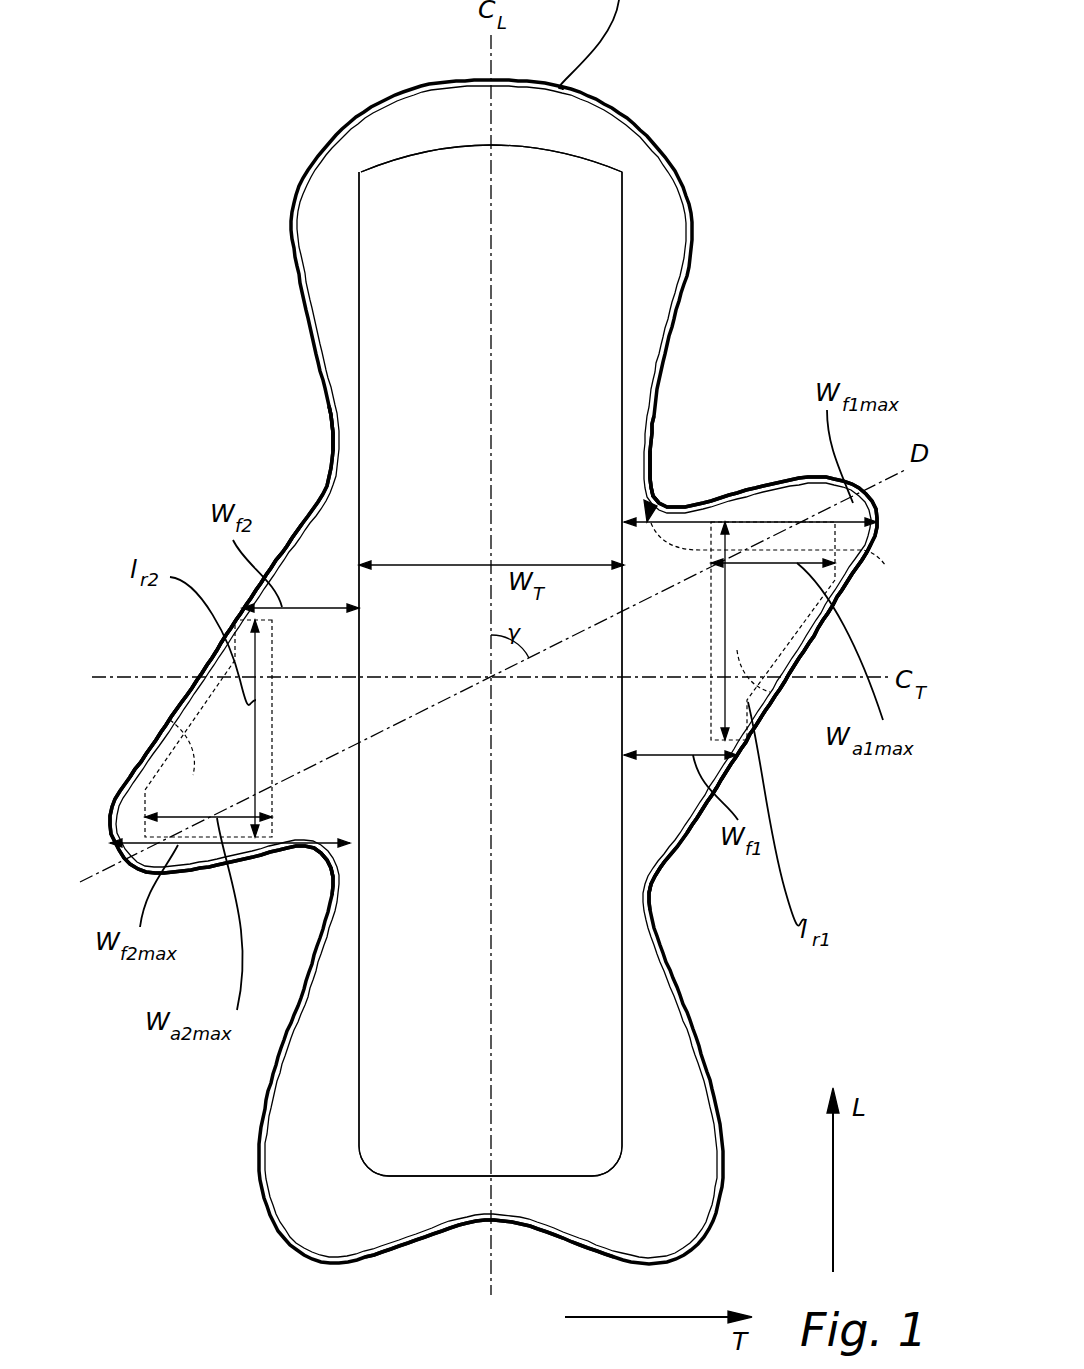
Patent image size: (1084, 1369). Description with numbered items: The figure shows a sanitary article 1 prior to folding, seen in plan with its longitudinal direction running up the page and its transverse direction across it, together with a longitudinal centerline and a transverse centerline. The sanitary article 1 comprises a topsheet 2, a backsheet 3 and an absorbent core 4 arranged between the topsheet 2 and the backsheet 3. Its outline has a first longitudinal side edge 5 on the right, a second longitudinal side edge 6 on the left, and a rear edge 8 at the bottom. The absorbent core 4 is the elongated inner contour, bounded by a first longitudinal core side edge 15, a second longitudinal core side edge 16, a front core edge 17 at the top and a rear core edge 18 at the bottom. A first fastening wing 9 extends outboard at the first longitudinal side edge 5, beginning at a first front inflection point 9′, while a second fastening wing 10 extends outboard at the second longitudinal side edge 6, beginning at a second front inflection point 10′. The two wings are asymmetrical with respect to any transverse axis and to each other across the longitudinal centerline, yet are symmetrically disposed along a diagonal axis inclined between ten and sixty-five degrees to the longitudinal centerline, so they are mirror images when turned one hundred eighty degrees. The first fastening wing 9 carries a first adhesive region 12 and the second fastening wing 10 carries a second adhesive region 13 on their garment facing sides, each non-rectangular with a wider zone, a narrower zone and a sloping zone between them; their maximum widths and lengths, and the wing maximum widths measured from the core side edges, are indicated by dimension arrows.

The sanitary article 1 is at (728, 289).
The topsheet 2 is at (660, 497).
The backsheet 3 is at (776, 560).
The absorbent core 4 is at (580, 178).
The first longitudinal side edge 5 is at (655, 457).
The second longitudinal side edge 6 is at (332, 458).
The rear edge 8 is at (560, 1237).
The first fastening wing 9 is at (777, 663).
The first front inflection point 9′ is at (653, 475).
The second fastening wing 10 is at (128, 813).
The second front inflection point 10′ is at (332, 472).
The first adhesive region 12 is at (777, 700).
The second adhesive region 13 is at (163, 712).
The first longitudinal core side edge 15 is at (627, 322).
The second longitudinal core side edge 16 is at (356, 390).
The front core edge 17 is at (442, 142).
The rear core edge 18 is at (448, 1176).